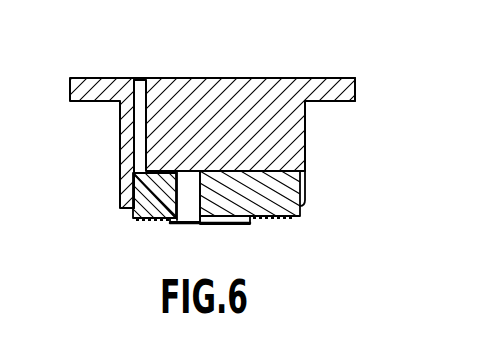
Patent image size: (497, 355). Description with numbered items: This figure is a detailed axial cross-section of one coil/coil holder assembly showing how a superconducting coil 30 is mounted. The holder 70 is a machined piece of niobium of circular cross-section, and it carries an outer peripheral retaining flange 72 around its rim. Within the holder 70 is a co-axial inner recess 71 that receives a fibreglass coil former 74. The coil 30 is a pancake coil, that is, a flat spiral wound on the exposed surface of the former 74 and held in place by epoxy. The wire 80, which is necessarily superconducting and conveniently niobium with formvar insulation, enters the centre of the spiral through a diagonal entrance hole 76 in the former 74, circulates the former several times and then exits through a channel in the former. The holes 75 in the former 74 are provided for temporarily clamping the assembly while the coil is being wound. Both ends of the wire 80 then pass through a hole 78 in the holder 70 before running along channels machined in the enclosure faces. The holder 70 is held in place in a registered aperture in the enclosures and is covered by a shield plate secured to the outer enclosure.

The holder 70 is at (225, 76).
The outer peripheral retaining flange 72 is at (348, 103).
The hole 78 is at (138, 133).
The diagonal entrance hole 76 is at (148, 194).
The wire 80 is at (142, 223).
The co-axial inner recess 71 is at (300, 183).
The coil former 74 is at (238, 231).
The holes 75 is at (188, 222).
The superconducting coil 30 is at (295, 226).